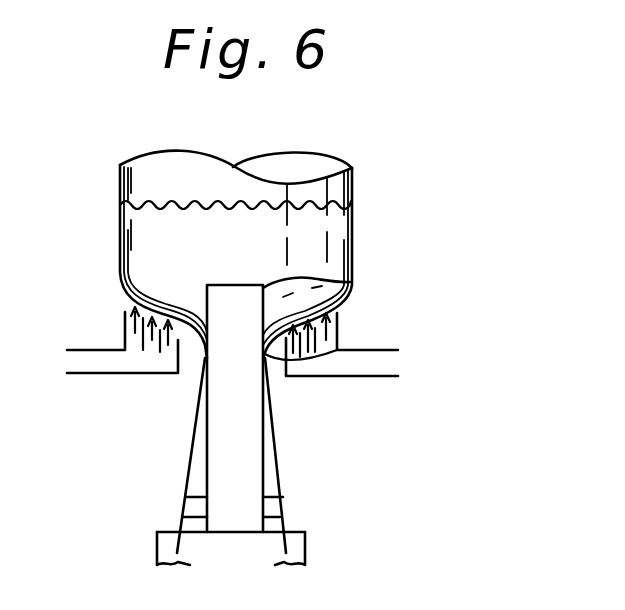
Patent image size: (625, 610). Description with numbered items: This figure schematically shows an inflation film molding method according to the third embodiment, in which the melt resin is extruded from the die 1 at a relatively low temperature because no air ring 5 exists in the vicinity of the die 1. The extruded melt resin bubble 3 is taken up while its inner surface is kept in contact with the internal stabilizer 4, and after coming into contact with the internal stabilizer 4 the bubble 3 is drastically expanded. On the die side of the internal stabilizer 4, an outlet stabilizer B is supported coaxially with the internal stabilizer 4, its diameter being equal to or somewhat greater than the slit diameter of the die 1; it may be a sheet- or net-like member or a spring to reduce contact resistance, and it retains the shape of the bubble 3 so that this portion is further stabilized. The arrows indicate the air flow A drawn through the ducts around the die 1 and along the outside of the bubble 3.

The die 1 is at (297, 550).
The bubble 3 is at (352, 223).
The internal stabilizer 4 is at (350, 282).
The air ring 5 is at (365, 377).
The air flow A is at (343, 350).
The outlet stabilizer B is at (277, 503).